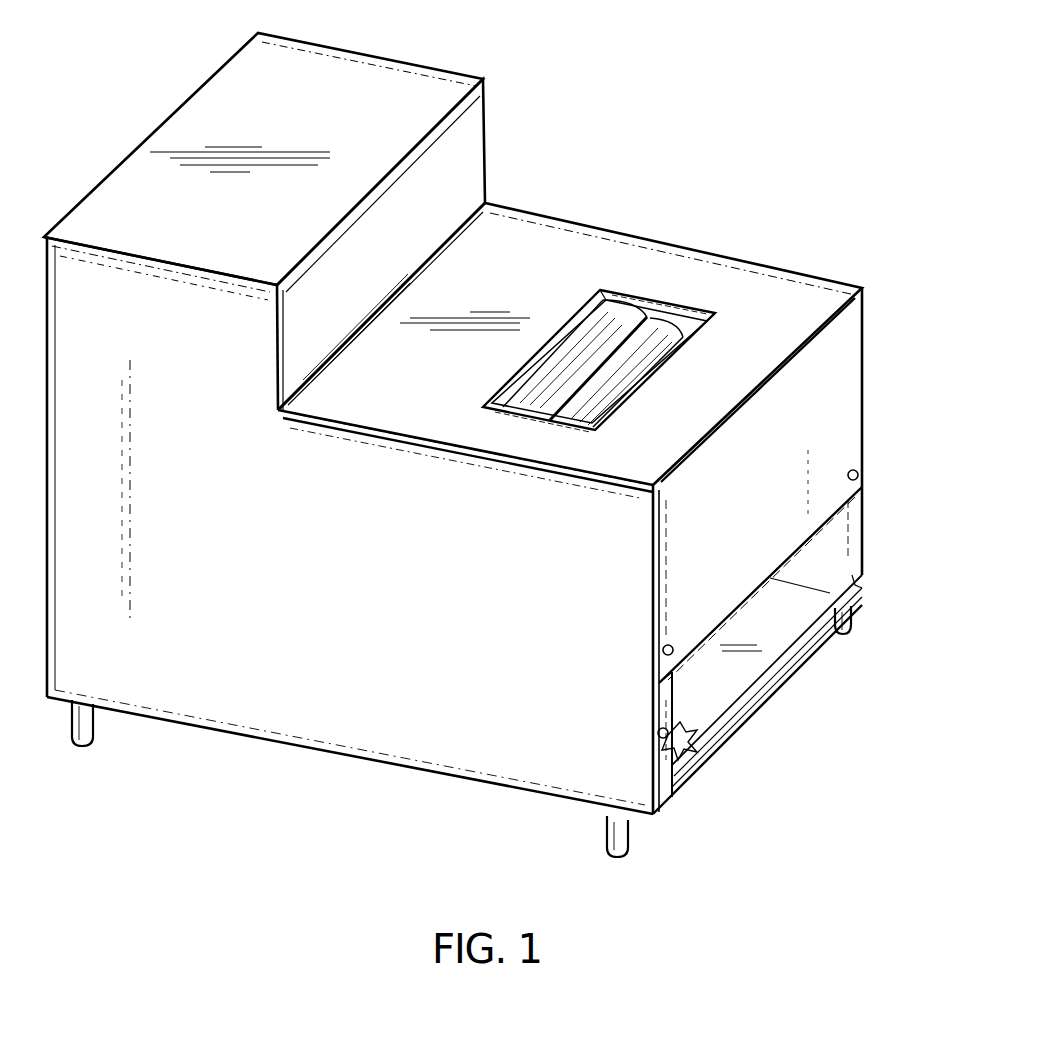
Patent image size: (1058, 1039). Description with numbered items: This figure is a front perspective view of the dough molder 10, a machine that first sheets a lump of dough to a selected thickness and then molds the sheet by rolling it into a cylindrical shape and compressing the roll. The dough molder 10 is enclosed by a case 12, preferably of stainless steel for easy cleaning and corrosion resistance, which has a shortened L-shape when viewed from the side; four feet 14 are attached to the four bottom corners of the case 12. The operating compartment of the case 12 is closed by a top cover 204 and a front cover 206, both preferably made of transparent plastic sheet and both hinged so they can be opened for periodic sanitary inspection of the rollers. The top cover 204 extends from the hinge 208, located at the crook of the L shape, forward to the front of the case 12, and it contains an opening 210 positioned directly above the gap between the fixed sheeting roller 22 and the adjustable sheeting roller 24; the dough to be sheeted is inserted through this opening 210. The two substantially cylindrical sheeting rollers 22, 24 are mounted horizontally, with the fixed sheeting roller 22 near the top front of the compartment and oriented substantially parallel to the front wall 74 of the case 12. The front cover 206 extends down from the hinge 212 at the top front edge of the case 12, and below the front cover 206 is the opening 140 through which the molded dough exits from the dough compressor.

The dough molder 10 is at (483, 458).
The case 12 is at (423, 64).
The feet 14 is at (73, 745).
The fixed sheeting roller 22 is at (668, 340).
The adjustable sheeting roller 24 is at (587, 342).
The front wall 74 is at (660, 797).
The opening 140 is at (845, 547).
The top cover 204 is at (828, 283).
The front cover 206 is at (850, 382).
The hinge 208 is at (463, 227).
The opening 210 is at (515, 383).
The hinge 212 is at (718, 437).